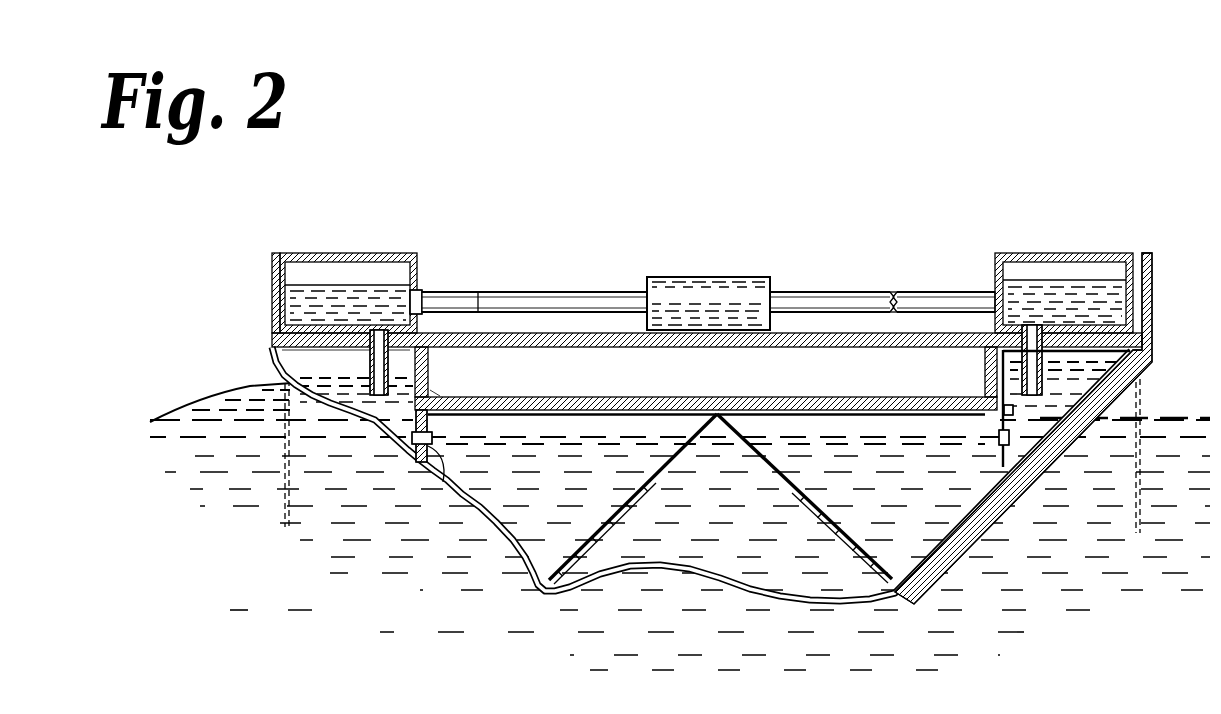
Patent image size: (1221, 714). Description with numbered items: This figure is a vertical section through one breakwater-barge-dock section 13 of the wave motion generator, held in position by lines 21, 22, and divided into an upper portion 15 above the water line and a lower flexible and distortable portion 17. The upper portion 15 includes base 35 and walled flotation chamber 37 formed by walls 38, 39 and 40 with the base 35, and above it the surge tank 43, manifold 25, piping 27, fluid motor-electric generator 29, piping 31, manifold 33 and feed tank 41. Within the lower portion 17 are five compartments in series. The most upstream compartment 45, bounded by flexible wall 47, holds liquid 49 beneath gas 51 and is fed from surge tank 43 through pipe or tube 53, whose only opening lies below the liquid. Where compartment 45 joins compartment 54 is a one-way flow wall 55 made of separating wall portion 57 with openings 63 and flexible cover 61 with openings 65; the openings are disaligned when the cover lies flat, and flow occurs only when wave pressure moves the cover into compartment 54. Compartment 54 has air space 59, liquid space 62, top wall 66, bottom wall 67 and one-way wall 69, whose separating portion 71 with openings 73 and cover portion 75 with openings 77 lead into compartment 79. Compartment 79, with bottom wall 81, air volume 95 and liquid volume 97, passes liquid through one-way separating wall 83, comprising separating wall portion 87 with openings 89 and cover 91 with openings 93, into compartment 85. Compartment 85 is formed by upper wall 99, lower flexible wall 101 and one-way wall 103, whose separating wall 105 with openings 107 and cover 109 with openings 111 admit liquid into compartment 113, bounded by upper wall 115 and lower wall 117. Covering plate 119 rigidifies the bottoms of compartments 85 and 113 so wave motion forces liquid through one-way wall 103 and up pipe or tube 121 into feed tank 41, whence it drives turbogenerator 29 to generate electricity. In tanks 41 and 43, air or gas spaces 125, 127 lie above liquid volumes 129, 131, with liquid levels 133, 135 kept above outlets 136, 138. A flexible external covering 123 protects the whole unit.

The breakwater-barge-dock section 13 is at (674, 453).
The upper portion 15 is at (727, 414).
The lower flexible and distortable portion 17 is at (701, 486).
The line 21 is at (285, 494).
The line 22 is at (1140, 402).
The manifold 25 is at (534, 287).
The piping 27 is at (521, 292).
The fluid motor-electric generator 29 is at (690, 278).
The piping 31 is at (882, 277).
The manifold 33 is at (922, 291).
The base 35 is at (882, 277).
The walled flotation chamber 37 is at (855, 362).
The wall 38 is at (428, 375).
The wall 39 is at (706, 393).
The wall 40 is at (985, 375).
The feed tank 41 is at (1049, 263).
The surge tank 43 is at (314, 264).
The compartment 45 is at (273, 345).
The wall 47 is at (307, 365).
The liquid 49 is at (428, 390).
The gas 51 is at (280, 373).
The pipe or tube 53 is at (330, 398).
The compartment 54 is at (701, 486).
The one-way flow wall 55 is at (402, 406).
The separating wall portion 57 is at (413, 406).
The air space 59 is at (597, 423).
The flexible cover 61 is at (447, 460).
The liquid space 62 is at (701, 486).
The openings 63 is at (428, 406).
The openings 65 is at (701, 486).
The top wall 66 is at (706, 393).
The bottom wall 67 is at (701, 486).
The one-way wall 69 is at (627, 499).
The separating portion 71 is at (627, 499).
The openings 73 is at (633, 499).
The cover portion 75 is at (633, 499).
The openings 77 is at (620, 535).
The compartment 79 is at (701, 486).
The bottom wall 81 is at (701, 486).
The one-way separating wall 83 is at (815, 498).
The compartment 85 is at (1023, 428).
The separating wall portion 87 is at (815, 498).
The openings 89 is at (815, 498).
The cover 91 is at (815, 498).
The openings 93 is at (870, 542).
The air volume 95 is at (725, 477).
The liquid volume 97 is at (701, 486).
The upper wall 99 is at (800, 408).
The lower flexible wall 101 is at (977, 507).
The one-way wall 103 is at (1019, 412).
The separating wall 105 is at (1023, 428).
The openings 107 is at (1019, 416).
The cover 109 is at (1020, 414).
The openings 111 is at (701, 474).
The compartment 113 is at (1116, 339).
The upper wall 115 is at (1092, 347).
The lower wall 117 is at (1082, 392).
The covering plate 119 is at (1003, 513).
The pipe or tube 121 is at (1087, 257).
The external covering 123 is at (701, 486).
The air or gas space 125 is at (1049, 263).
The air or gas space 127 is at (314, 264).
The liquid volume 129 is at (1049, 263).
The liquid volume 131 is at (314, 264).
The liquid level 133 is at (1049, 275).
The liquid level 135 is at (312, 293).
The outlet 136 is at (1061, 275).
The outlet 138 is at (412, 300).